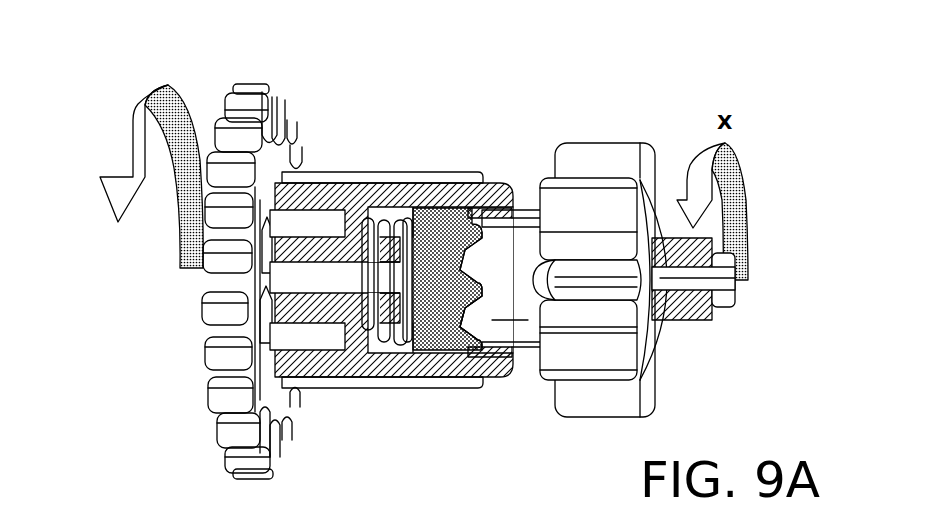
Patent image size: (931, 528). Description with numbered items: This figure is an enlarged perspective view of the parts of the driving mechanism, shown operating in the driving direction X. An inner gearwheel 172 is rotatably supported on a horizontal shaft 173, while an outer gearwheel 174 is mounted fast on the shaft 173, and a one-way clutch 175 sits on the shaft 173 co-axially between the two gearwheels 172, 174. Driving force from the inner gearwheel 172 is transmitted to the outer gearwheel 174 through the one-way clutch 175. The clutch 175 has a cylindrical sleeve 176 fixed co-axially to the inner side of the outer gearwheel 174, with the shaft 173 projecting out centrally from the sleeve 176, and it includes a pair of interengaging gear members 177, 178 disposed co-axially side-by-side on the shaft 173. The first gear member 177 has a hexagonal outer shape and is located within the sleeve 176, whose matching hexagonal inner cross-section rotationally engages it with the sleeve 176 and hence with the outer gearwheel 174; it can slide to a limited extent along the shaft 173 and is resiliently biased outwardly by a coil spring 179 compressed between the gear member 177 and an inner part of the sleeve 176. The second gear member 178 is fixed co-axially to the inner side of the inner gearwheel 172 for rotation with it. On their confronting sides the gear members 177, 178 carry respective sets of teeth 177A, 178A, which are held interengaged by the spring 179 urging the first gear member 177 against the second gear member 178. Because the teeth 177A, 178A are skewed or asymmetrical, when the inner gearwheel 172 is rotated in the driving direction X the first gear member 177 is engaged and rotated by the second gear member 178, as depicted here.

The inner gearwheel 172 is at (595, 158).
The horizontal shaft 173 is at (715, 305).
The outer gearwheel 174 is at (241, 100).
The one-way clutch 175 is at (463, 117).
The cylindrical sleeve 176 is at (348, 193).
The first gear member 177 is at (447, 223).
The teeth 177A is at (462, 250).
The second gear member 178 is at (525, 228).
The teeth 178A is at (468, 310).
The coil spring 179 is at (388, 220).